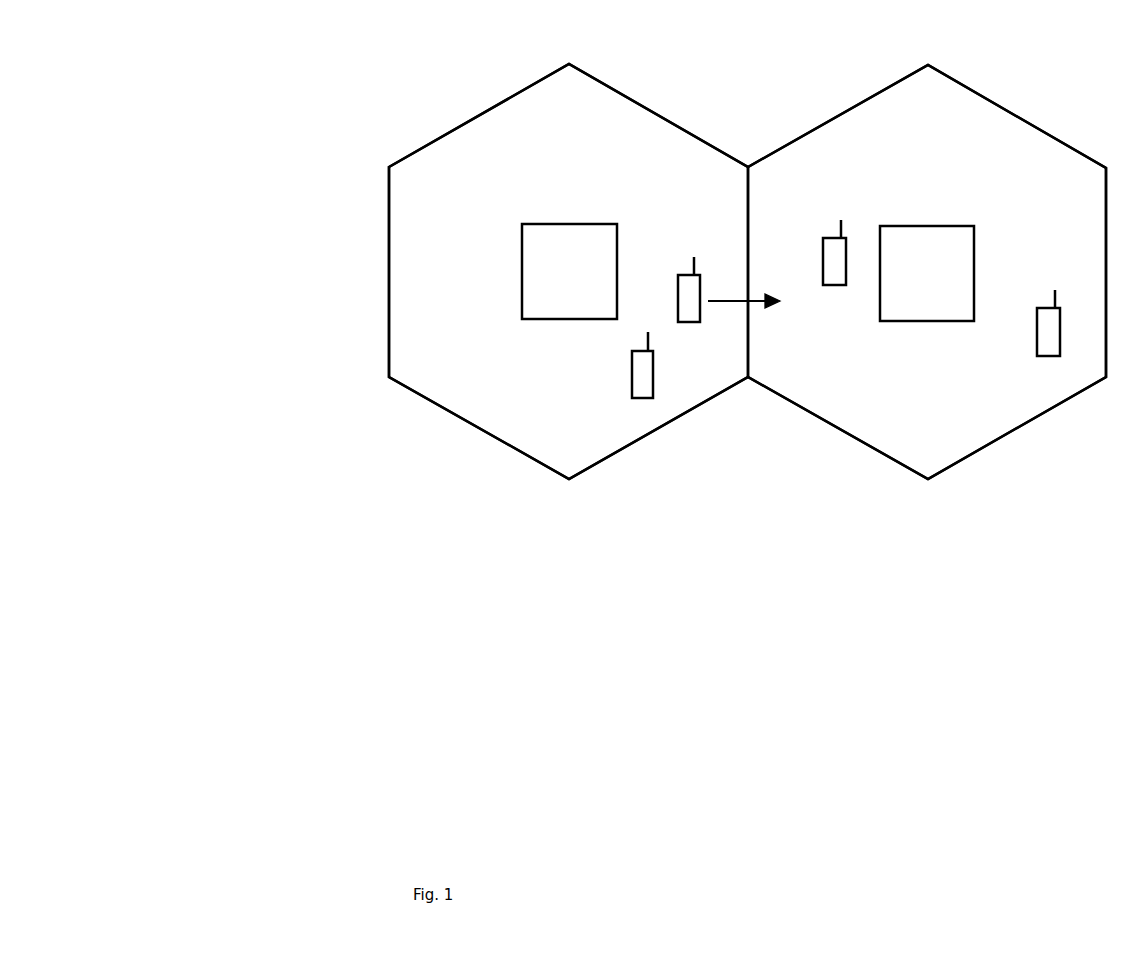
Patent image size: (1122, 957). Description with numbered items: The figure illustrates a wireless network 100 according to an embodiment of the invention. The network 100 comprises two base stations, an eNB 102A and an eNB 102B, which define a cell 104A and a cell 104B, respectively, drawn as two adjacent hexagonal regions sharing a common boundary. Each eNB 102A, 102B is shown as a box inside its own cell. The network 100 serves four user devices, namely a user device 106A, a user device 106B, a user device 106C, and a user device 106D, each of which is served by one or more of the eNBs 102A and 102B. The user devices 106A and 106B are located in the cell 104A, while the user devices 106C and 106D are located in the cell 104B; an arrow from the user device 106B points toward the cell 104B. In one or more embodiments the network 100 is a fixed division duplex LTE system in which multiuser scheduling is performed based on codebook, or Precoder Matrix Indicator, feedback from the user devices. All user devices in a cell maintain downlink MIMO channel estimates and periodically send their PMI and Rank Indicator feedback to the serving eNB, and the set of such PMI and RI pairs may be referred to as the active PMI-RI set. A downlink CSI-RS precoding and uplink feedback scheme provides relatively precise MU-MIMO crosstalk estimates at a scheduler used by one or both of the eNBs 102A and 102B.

The wireless network 100 is at (240, 103).
The cell 104A is at (470, 122).
The cell 104B is at (829, 124).
The eNB 102A is at (583, 224).
The eNB 102B is at (941, 226).
The user device 106A is at (632, 372).
The user device 106B is at (678, 298).
The user device 106C is at (823, 260).
The user device 106D is at (1037, 331).